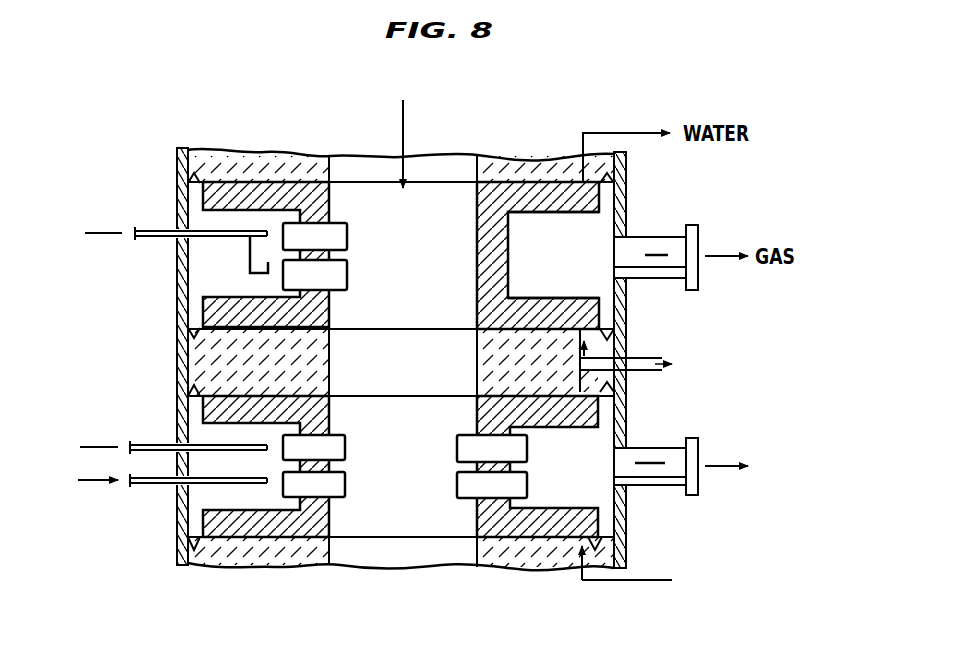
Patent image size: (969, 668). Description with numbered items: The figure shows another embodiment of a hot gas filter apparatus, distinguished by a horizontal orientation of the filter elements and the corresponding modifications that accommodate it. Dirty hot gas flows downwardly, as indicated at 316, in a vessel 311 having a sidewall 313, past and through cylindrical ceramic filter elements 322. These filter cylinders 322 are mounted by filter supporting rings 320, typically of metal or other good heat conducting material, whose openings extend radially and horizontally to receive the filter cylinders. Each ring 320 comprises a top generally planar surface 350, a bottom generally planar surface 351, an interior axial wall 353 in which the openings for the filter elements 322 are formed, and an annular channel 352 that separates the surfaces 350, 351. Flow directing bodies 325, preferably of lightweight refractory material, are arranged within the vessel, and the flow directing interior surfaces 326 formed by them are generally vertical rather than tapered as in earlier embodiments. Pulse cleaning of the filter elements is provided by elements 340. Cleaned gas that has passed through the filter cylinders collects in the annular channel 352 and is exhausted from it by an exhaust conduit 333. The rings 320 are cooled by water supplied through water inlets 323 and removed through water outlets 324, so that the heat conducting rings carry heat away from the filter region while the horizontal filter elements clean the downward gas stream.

The vessel 311 is at (177, 302).
The sidewall 313 is at (177, 151).
The downward flow of dirty hot gas 316 is at (403, 125).
The filter supporting ring 320 is at (469, 426).
The cylindrical ceramic filter element 322 is at (458, 485).
The water inlet 323 is at (636, 582).
The water outlet 324 is at (660, 373).
The flow directing body 325 is at (331, 345).
The flow directing interior surface 326 is at (476, 162).
The exhaust conduit 333 is at (659, 472).
The pulse cleaning element 340 is at (222, 249).
The top generally planar surface 350 is at (562, 213).
The bottom generally planar surface 351 is at (560, 297).
The annular channel 352 is at (220, 433).
The interior axial wall 353 is at (477, 251).